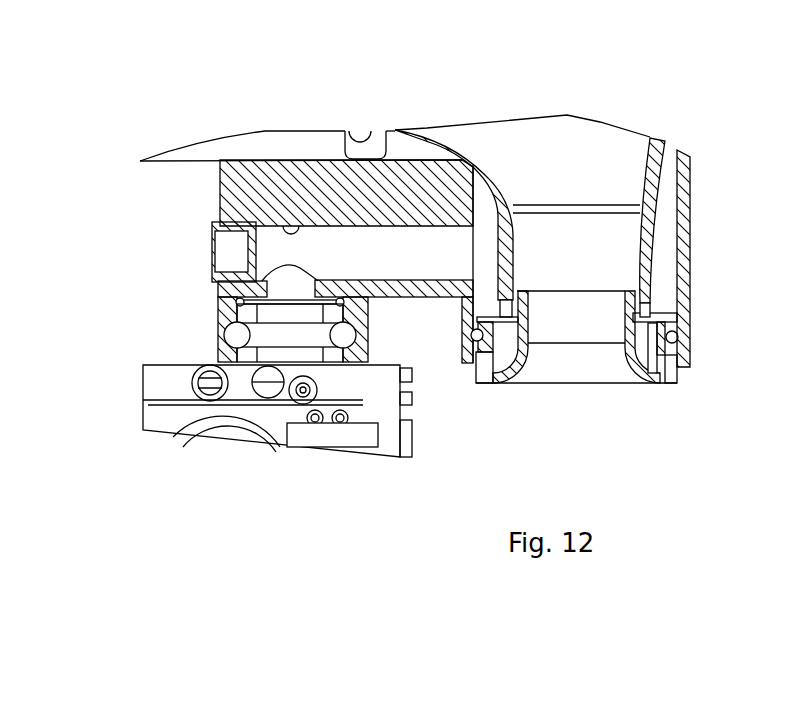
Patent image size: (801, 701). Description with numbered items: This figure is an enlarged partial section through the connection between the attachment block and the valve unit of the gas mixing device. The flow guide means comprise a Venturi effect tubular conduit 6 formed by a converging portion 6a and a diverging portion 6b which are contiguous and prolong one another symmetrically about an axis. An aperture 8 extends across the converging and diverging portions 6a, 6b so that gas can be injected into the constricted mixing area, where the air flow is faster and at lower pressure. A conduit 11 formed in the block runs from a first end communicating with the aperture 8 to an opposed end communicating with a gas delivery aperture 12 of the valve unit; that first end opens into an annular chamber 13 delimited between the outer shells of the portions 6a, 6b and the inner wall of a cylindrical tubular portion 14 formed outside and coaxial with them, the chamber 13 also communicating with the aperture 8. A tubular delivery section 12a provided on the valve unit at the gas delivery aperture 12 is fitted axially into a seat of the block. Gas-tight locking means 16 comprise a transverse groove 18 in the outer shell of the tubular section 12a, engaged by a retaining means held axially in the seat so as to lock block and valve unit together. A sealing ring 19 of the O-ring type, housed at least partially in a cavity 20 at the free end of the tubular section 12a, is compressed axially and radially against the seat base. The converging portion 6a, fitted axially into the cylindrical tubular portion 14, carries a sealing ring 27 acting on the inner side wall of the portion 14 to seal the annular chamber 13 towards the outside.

The Venturi effect tubular conduit 6 is at (583, 265).
The converging portion 6a is at (625, 345).
The diverging portion 6b is at (650, 243).
The aperture 8 is at (515, 275).
The conduit 11 is at (291, 224).
The gas delivery aperture 12 is at (258, 312).
The tubular delivery section 12a is at (152, 430).
The annular chamber 13 is at (490, 242).
The cylindrical tubular portion 14 is at (690, 290).
The gas-tight locking means 16 is at (378, 333).
The transverse groove 18 is at (240, 342).
The sealing ring 19 is at (237, 277).
The cavity 20 is at (240, 312).
The sealing ring 27 is at (680, 339).